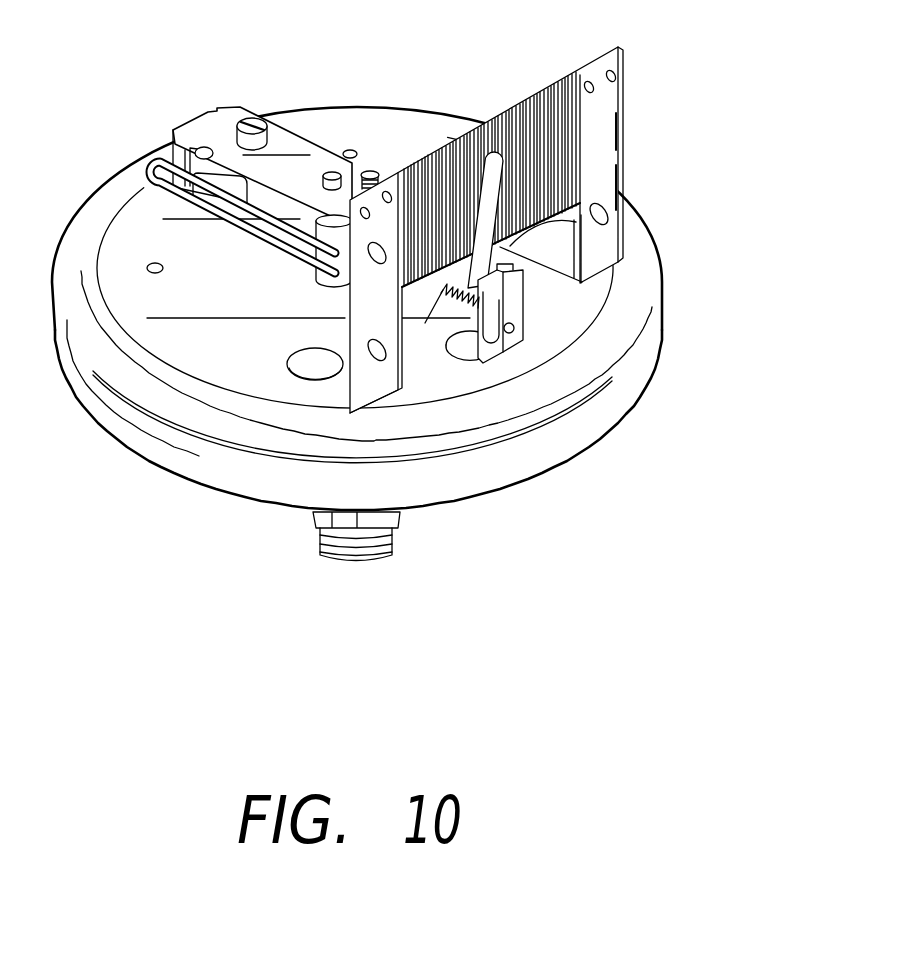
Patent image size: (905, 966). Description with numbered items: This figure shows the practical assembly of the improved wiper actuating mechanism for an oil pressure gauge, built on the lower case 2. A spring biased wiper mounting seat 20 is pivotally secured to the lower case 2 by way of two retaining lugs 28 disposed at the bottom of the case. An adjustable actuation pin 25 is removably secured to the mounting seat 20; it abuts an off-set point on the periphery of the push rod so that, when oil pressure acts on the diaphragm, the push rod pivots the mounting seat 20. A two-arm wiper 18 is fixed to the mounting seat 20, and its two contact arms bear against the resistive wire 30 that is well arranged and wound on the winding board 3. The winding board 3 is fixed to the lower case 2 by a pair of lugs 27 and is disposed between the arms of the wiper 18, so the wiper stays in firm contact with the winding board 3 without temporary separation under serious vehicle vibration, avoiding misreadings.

The lower case 2 is at (148, 437).
The winding board 3 is at (590, 137).
The two-arm wiper 18 is at (490, 247).
The spring biased wiper mounting seat 20 is at (285, 152).
The adjustable actuation pin 25 is at (375, 173).
The lugs 27 is at (287, 397).
The retaining lugs 28 is at (497, 353).
The resistive wire 30 is at (545, 135).